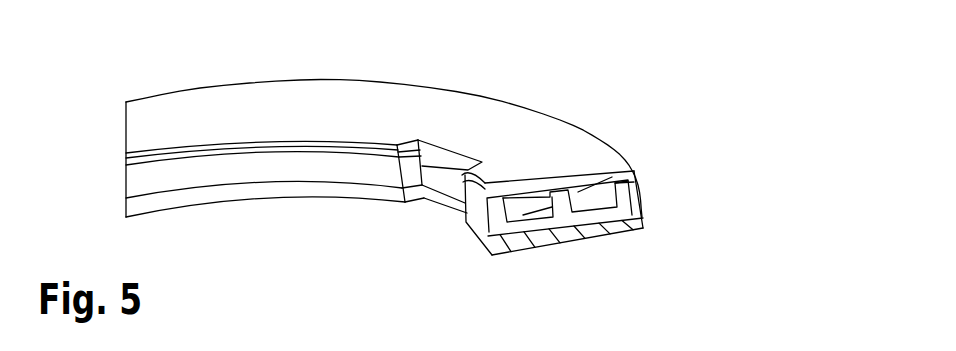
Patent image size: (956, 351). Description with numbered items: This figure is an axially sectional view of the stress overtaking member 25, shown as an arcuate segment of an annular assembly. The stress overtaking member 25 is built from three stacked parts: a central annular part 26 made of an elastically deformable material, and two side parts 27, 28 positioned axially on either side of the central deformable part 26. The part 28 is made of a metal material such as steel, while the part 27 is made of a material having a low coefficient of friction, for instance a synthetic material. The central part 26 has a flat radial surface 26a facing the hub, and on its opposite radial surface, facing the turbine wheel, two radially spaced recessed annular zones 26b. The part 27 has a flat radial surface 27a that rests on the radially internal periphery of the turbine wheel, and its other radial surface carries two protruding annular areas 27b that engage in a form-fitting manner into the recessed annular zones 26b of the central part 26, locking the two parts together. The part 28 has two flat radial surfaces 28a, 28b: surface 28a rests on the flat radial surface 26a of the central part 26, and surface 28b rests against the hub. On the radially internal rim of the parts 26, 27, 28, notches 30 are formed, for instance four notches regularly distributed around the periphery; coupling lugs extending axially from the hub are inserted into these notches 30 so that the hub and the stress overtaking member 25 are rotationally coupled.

The stress overtaking member 25 is at (556, 93).
The central annular part 26 is at (603, 217).
The flat radial surface 26a is at (627, 237).
The recessed annular zones 26b is at (580, 208).
The side part 27 is at (593, 188).
The flat radial surface 27a is at (540, 150).
The protruding annular areas 27b is at (610, 193).
The side part 28 is at (545, 243).
The flat radial surface 28a is at (627, 237).
The flat radial surface 28b is at (515, 255).
The notches 30 is at (441, 210).